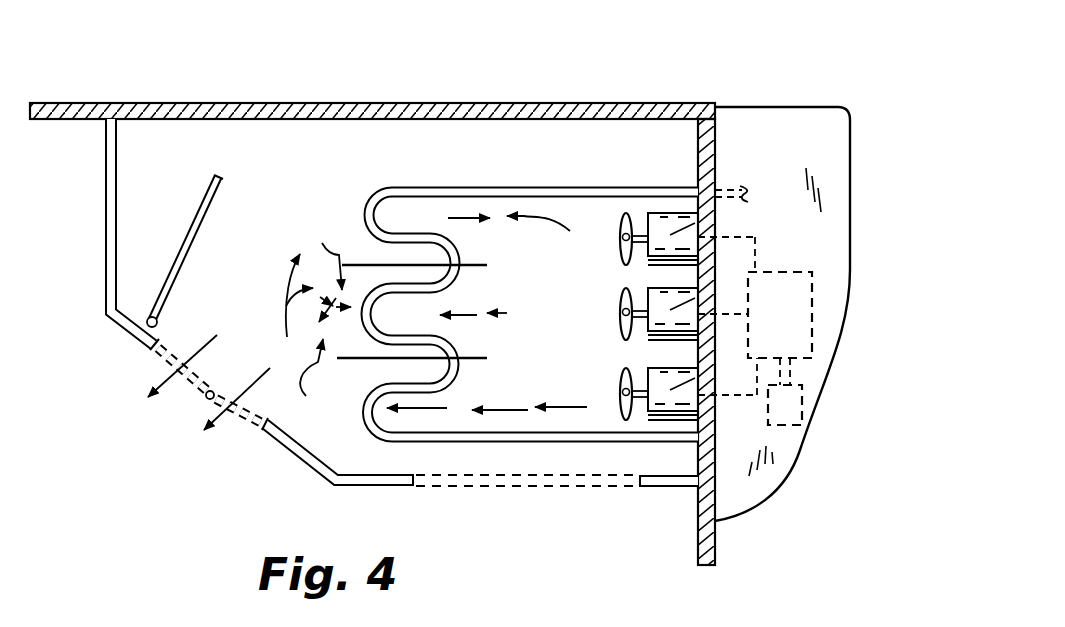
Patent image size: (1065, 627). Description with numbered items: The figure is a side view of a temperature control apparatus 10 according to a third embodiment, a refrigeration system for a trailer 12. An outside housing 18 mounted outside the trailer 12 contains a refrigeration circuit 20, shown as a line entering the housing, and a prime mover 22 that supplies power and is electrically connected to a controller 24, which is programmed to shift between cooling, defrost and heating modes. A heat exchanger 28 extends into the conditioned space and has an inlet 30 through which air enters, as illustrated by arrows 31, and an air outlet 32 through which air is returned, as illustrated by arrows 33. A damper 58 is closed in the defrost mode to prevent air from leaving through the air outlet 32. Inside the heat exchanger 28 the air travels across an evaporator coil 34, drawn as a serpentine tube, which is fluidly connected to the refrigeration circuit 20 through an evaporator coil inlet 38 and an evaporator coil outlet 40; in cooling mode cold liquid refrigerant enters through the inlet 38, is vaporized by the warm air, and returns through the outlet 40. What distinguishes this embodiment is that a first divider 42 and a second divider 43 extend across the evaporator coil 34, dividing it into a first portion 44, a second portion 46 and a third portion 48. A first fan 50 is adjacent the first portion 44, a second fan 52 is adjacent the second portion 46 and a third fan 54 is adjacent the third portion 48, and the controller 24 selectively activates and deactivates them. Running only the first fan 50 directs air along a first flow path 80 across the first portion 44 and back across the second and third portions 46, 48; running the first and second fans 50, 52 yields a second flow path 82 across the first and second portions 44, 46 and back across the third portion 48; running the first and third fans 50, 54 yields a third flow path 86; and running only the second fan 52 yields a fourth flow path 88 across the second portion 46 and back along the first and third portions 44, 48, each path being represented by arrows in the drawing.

The temperature control unit 10 is at (642, 82).
The trailer 12 is at (360, 102).
The outside housing 18 is at (853, 196).
The refrigeration circuit 20 is at (742, 190).
The prime mover 22 is at (803, 412).
The controller 24 is at (766, 326).
The heat exchanger 28 is at (105, 157).
The inlet 30 is at (600, 470).
The arrows 31 is at (570, 448).
The air outlet 32 is at (173, 413).
The arrows 33 is at (212, 402).
The evaporator coil 34 is at (465, 275).
The evaporator coil inlet 38 is at (693, 447).
The evaporator coil outlet 40 is at (695, 190).
The first divider 42 is at (480, 265).
The second divider 43 is at (487, 359).
The first portion 44 is at (460, 383).
The second portion 46 is at (365, 197).
The third portion 48 is at (383, 213).
The first fan 50 is at (667, 397).
The second fan 52 is at (683, 302).
The third fan 54 is at (667, 229).
The damper 58 is at (205, 188).
The first flow path 80 is at (285, 303).
The second flow path 82 is at (470, 216).
The third flow path 86 is at (565, 407).
The fourth flow path 88 is at (466, 319).